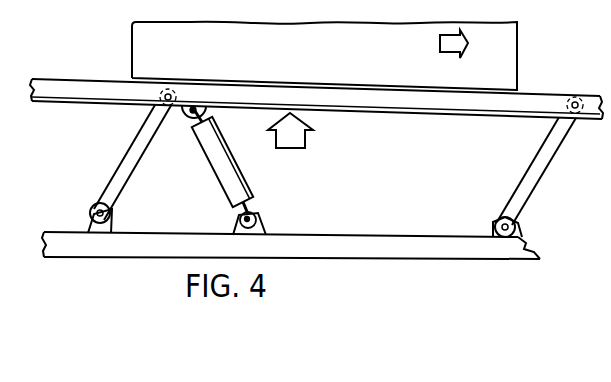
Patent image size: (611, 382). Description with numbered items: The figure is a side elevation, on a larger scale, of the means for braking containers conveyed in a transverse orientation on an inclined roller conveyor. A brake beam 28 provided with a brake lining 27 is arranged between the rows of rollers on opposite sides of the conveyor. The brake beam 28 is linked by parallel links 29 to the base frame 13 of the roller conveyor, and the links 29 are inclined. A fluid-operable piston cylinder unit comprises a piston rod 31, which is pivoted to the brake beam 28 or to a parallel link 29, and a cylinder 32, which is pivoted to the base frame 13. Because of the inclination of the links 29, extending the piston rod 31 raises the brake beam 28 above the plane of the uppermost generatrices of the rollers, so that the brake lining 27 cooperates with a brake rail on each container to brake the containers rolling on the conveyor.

The base frame 13 is at (333, 240).
The brake lining 27 is at (541, 93).
The brake beam 28 is at (476, 106).
The parallel links 29 is at (130, 168).
The piston rod 31 is at (203, 108).
The cylinder 32 is at (250, 181).